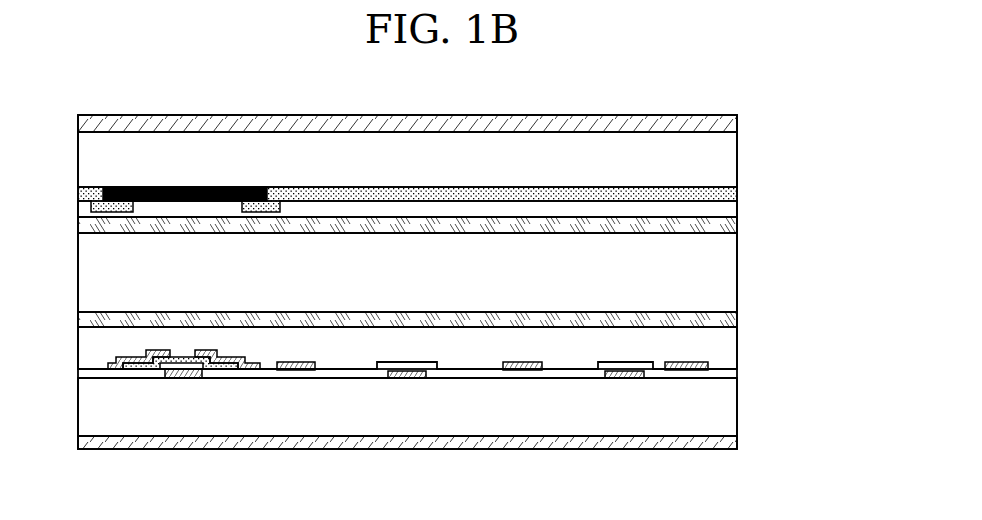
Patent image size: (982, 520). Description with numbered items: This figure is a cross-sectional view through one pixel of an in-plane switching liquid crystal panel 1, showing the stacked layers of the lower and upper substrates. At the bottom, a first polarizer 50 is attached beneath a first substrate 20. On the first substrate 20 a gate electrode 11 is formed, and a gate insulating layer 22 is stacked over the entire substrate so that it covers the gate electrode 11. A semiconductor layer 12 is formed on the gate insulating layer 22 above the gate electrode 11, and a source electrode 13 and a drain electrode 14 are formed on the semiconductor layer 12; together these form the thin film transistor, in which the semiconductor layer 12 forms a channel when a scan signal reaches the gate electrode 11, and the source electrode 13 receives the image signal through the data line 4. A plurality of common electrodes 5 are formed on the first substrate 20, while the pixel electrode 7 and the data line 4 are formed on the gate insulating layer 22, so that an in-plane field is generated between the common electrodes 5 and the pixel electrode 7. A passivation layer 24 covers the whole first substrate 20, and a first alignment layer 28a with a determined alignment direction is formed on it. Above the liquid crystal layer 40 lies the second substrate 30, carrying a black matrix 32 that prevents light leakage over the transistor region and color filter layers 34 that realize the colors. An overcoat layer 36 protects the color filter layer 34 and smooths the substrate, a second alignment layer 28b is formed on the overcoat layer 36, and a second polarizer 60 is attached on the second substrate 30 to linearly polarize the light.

The liquid crystal panel 1 is at (673, 112).
The second polarizer 60 is at (738, 123).
The second substrate 30 is at (730, 155).
The color filter layer 34 is at (733, 190).
The black matrix 32 is at (195, 187).
The overcoat layer 36 is at (732, 213).
The second alignment layer 28b is at (733, 228).
The liquid crystal layer 40 is at (732, 287).
The first alignment layer 28a is at (733, 318).
The passivation layer 24 is at (732, 339).
The gate insulating layer 22 is at (732, 374).
The first substrate 20 is at (732, 414).
The first polarizer 50 is at (733, 442).
The gate electrode 11 is at (181, 378).
The semiconductor layer 12 is at (218, 368).
The source electrode 13 is at (120, 369).
The drain electrode 14 is at (248, 367).
The common electrode 5 is at (407, 378).
The pixel electrode 7 is at (522, 370).
The data line 4 is at (685, 370).